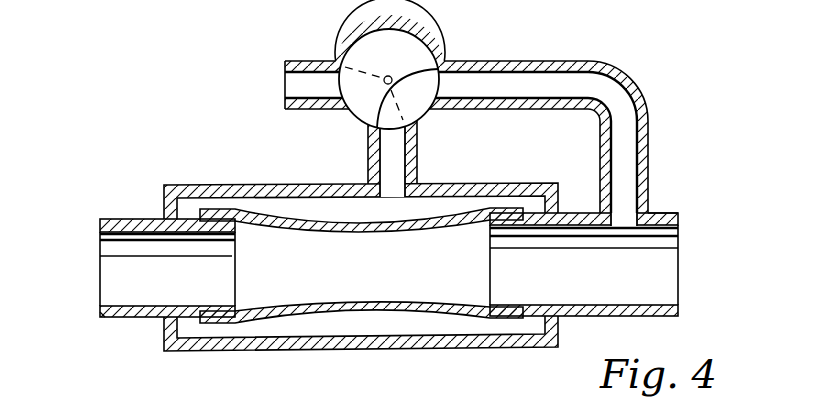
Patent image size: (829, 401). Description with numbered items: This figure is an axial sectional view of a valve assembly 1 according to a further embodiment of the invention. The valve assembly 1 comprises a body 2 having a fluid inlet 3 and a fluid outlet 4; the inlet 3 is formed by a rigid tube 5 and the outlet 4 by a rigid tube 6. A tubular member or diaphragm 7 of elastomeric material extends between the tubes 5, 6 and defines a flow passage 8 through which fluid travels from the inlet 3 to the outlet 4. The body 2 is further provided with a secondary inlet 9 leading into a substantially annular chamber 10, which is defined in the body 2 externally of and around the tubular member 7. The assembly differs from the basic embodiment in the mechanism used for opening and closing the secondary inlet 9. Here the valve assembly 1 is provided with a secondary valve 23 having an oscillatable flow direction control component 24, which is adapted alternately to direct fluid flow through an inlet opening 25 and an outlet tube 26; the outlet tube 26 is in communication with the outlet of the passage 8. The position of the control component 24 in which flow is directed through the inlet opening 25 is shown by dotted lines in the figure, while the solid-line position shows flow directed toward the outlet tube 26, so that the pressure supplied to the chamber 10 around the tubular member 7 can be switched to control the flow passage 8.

The valve assembly 1 is at (381, 196).
The body 2 is at (507, 348).
The fluid inlet 3 is at (136, 284).
The fluid outlet 4 is at (658, 282).
The rigid tube 5 is at (102, 317).
The rigid tube 6 is at (658, 213).
The tubular member or diaphragm 7 is at (282, 318).
The flow passage 8 is at (420, 283).
The secondary inlet 9 is at (392, 190).
The annular chamber 10 is at (343, 208).
The secondary valve 23 is at (433, 33).
The oscillatable flow direction control component 24 is at (367, 50).
The inlet opening 25 is at (283, 90).
The outlet tube 26 is at (557, 143).